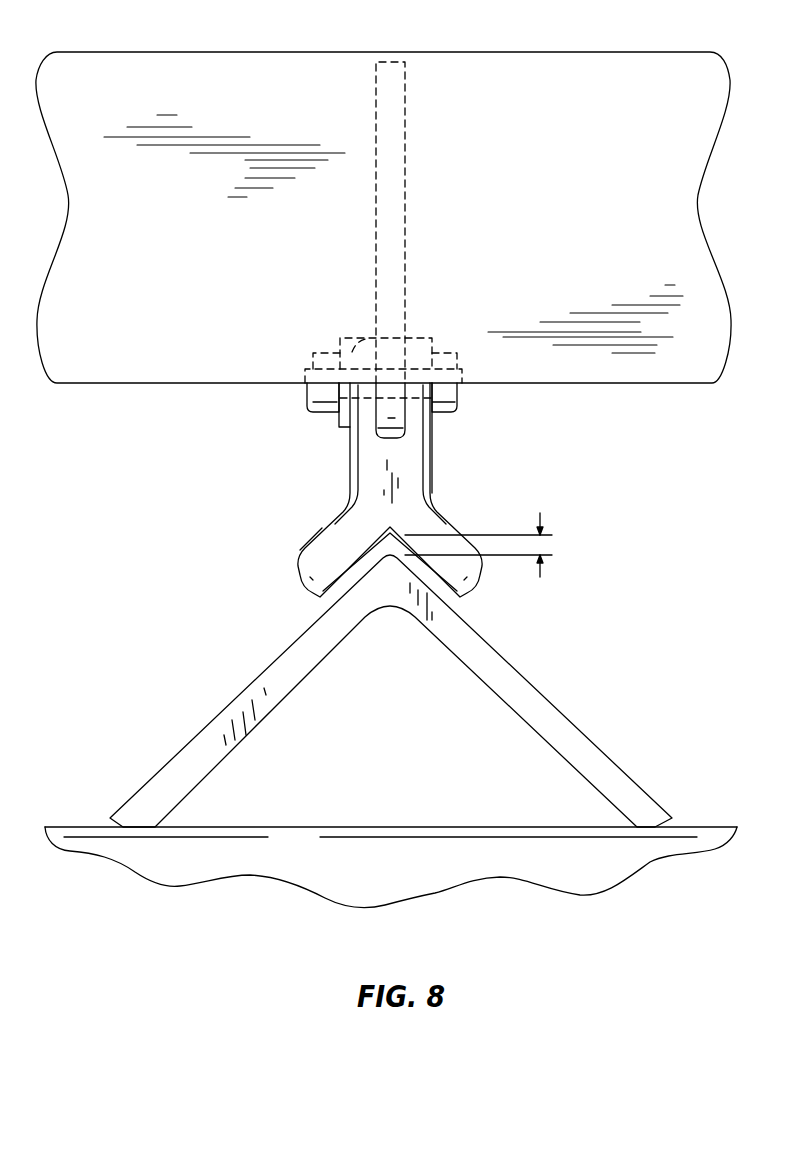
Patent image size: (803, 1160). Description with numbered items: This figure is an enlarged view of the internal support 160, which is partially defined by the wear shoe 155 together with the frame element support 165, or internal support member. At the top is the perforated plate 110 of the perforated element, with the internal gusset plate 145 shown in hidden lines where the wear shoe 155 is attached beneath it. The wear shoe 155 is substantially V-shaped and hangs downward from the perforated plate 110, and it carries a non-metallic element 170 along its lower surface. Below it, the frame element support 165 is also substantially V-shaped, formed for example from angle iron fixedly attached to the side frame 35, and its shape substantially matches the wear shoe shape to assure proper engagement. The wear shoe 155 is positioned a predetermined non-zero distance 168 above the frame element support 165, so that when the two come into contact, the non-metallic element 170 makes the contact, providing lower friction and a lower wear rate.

The perforated plate 110 is at (515, 70).
The internal gusset plate 145 is at (404, 183).
The wear shoe 155 is at (412, 468).
The internal support 160 is at (438, 605).
The frame element support 165 is at (557, 722).
The predetermined non-zero distance 168 is at (541, 576).
The non-metallic element 170 is at (340, 583).
The side frame 35 is at (637, 850).